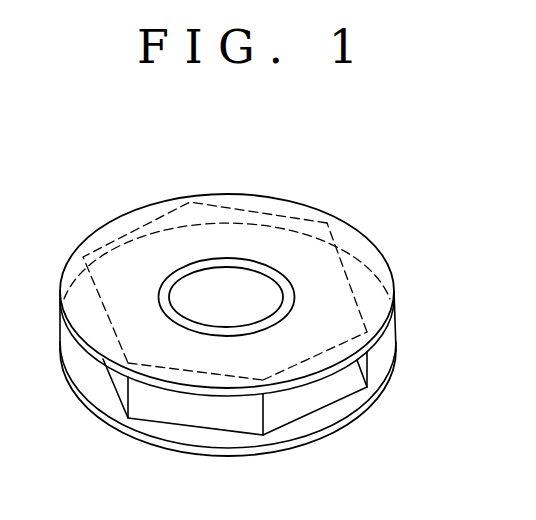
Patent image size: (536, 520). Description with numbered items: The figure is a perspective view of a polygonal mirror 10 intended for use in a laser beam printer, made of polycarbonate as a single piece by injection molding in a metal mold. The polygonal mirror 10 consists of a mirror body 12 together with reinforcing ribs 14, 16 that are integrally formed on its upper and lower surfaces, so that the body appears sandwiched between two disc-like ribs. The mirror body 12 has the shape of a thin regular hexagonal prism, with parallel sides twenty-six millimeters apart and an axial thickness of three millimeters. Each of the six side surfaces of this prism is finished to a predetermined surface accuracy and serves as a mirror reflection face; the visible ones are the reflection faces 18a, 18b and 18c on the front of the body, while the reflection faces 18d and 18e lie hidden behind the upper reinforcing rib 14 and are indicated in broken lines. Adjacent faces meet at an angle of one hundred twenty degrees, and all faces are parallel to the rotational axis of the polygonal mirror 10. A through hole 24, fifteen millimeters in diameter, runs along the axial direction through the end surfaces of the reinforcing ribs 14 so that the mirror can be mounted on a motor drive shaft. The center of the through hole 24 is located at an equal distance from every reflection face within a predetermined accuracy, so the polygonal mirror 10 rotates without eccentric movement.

The polygonal mirror 10 is at (258, 192).
The mirror body 12 is at (305, 420).
The reinforcing rib 14 is at (378, 273).
The reinforcing rib 16 is at (327, 420).
The reflection face 18a is at (117, 386).
The reflection face 18b is at (199, 420).
The reflection face 18c is at (337, 388).
The reflection face 18d is at (345, 255).
The reflection face 18e is at (128, 226).
The through hole 24 is at (207, 318).